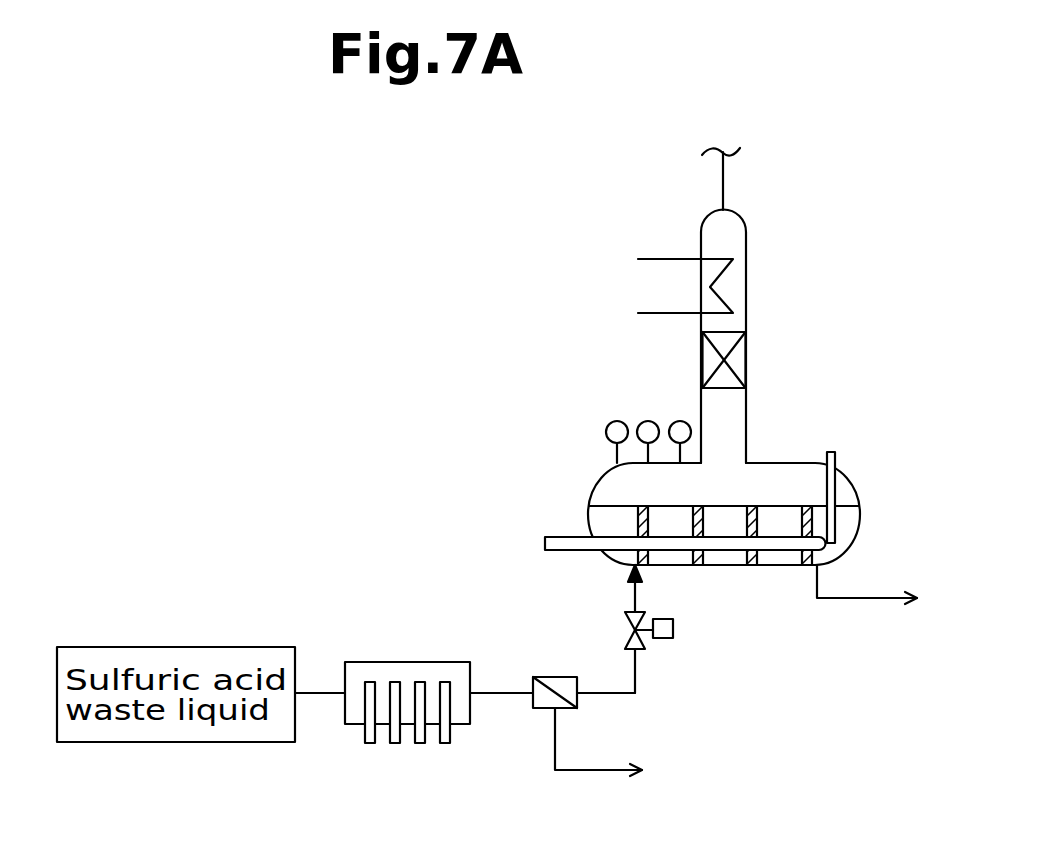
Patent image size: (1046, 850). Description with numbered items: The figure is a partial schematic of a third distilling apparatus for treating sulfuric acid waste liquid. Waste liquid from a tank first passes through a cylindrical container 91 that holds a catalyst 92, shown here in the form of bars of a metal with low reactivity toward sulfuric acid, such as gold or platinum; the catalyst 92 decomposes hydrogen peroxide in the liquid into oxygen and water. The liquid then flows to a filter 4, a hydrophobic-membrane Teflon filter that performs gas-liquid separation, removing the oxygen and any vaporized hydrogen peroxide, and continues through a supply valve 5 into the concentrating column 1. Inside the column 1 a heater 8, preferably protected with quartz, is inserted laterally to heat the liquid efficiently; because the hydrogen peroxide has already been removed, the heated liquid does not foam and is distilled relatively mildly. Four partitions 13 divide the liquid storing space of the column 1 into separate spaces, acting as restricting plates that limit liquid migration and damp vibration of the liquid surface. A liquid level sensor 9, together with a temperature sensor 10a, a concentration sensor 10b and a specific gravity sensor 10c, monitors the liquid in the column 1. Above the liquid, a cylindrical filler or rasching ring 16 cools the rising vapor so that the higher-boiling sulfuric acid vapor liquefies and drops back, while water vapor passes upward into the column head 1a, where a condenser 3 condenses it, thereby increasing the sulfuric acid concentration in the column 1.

The concentrating column 1 is at (861, 500).
The column head 1a is at (748, 232).
The condenser 3 is at (720, 282).
The cylindrical filler (rasching ring) 16 is at (730, 352).
The temperature sensor 10a is at (606, 431).
The concentration sensor 10b is at (648, 420).
The specific gravity sensor 10c is at (680, 420).
The partitions 13 is at (807, 567).
The heater 8 is at (557, 535).
The liquid level sensor 9 is at (836, 457).
The cylindrical container 91 is at (405, 662).
The catalyst 92 is at (445, 744).
The filter 4 is at (553, 677).
The supply valve 5 is at (665, 638).